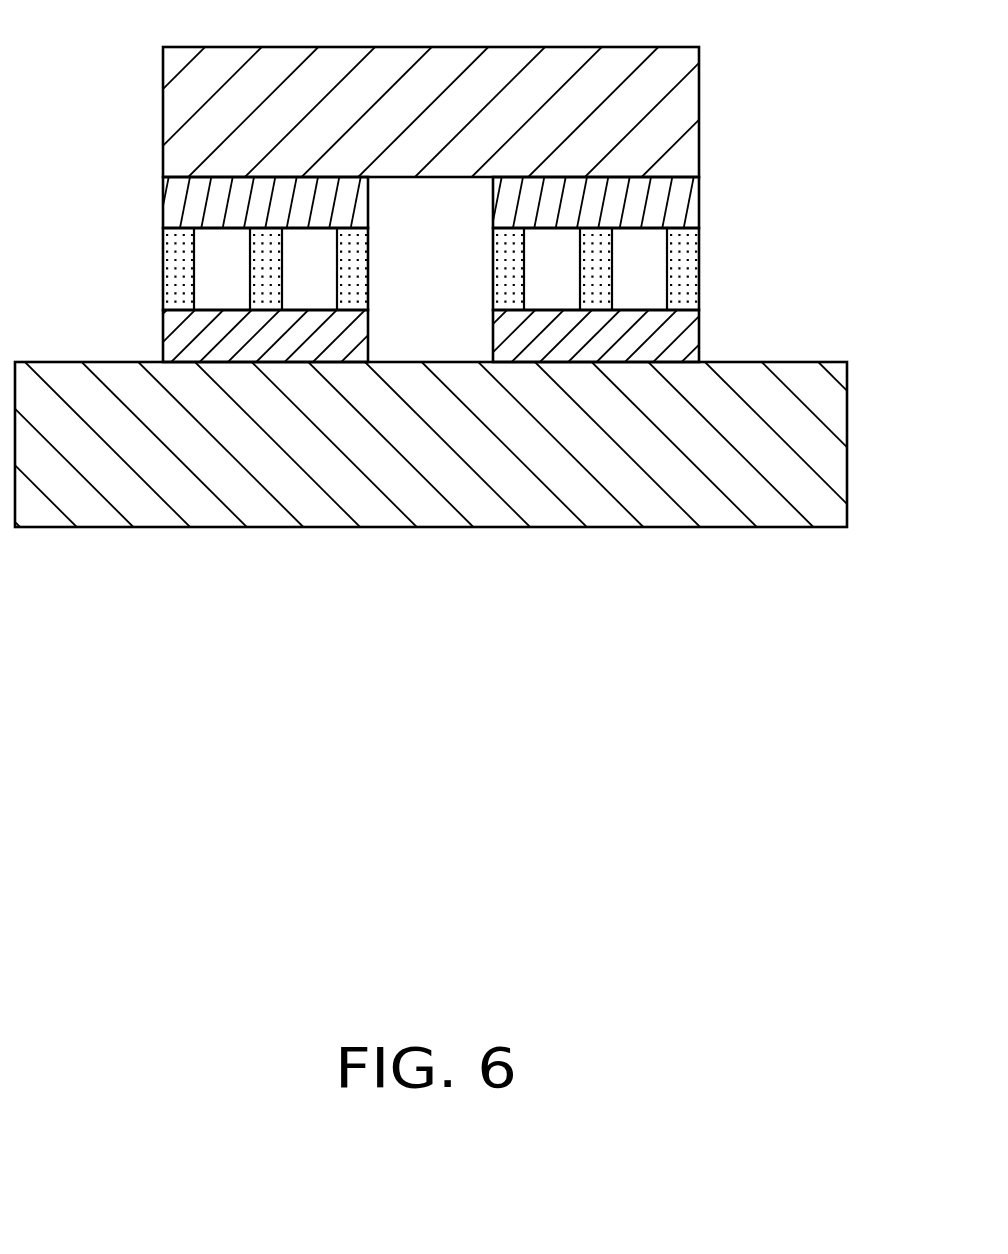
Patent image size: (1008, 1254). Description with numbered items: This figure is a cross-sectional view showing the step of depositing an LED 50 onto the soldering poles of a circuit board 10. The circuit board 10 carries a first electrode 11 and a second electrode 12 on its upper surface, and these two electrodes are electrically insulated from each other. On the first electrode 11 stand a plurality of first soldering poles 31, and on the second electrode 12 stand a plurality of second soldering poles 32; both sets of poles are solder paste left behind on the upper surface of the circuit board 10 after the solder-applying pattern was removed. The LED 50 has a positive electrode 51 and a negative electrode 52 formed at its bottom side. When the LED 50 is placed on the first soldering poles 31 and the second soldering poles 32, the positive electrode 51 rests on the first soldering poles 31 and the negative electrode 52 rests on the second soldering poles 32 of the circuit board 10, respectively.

The circuit board 10 is at (812, 434).
The first electrode 11 is at (183, 338).
The second electrode 12 is at (677, 335).
The first soldering poles 31 is at (183, 268).
The second soldering poles 32 is at (680, 267).
The LED 50 is at (668, 114).
The positive electrode 51 is at (187, 203).
The negative electrode 52 is at (678, 200).